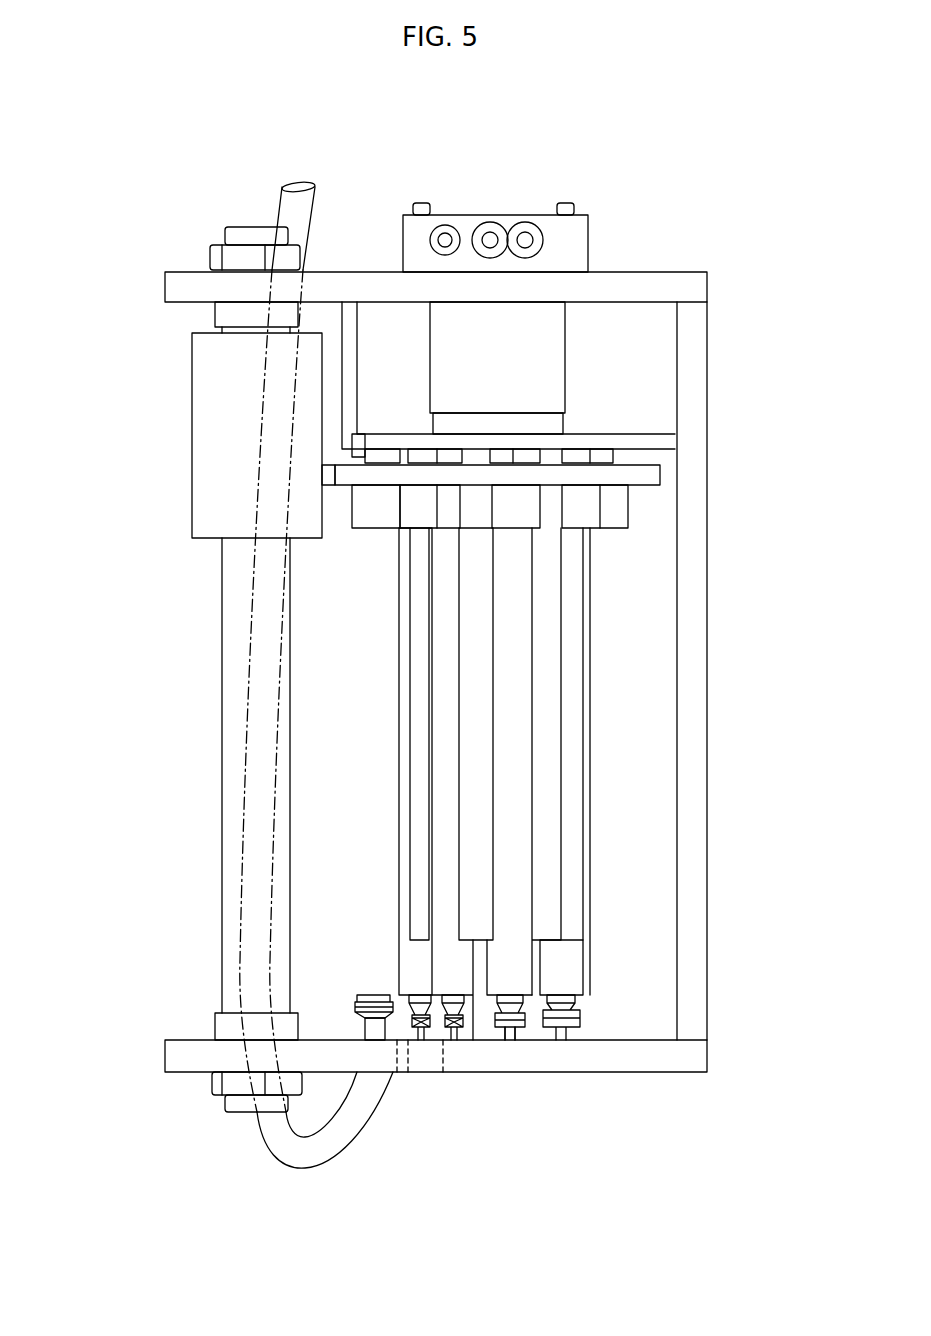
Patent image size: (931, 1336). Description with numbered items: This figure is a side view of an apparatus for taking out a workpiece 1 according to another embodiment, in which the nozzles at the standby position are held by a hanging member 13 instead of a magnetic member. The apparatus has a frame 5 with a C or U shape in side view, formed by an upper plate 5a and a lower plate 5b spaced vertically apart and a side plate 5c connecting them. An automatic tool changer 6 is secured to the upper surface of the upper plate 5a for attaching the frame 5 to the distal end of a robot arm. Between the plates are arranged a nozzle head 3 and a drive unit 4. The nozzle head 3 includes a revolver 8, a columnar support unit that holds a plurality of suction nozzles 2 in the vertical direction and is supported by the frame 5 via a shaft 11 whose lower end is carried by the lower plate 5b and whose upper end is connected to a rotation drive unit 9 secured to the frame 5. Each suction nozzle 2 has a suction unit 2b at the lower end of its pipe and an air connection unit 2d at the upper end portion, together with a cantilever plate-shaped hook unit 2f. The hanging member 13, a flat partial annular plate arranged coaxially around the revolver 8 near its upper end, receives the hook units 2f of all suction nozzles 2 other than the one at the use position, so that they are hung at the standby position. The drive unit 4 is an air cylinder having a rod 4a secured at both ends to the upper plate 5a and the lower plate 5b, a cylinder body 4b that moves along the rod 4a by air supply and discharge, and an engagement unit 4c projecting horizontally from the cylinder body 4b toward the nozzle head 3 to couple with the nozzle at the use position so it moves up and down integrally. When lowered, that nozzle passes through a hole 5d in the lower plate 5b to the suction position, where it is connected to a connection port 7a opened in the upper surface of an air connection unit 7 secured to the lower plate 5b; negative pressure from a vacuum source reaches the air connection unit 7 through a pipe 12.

The apparatus for taking out a workpiece 1 is at (131, 156).
The suction nozzle 2 is at (440, 672).
The suction unit 2b is at (582, 1020).
The air connection unit 2d is at (375, 530).
The hook unit 2f is at (355, 450).
The nozzle head 3 is at (641, 886).
The drive unit 4 is at (151, 371).
The rod 4a is at (222, 712).
The cylinder body 4b is at (192, 440).
The engagement unit 4c is at (328, 488).
The frame 5 is at (708, 415).
The upper plate 5a is at (648, 270).
The lower plate 5b is at (660, 1074).
The side plate 5c is at (708, 712).
The hole 5d is at (398, 1045).
The automatic tool changer 6 is at (490, 215).
The air connection unit 7 is at (362, 1008).
The connection port 7a is at (373, 992).
The revolver 8 is at (592, 600).
The rotation drive unit 9 is at (565, 327).
The shaft 11 is at (520, 1038).
The pipe 12 is at (300, 1170).
The hanging member 13 is at (662, 470).